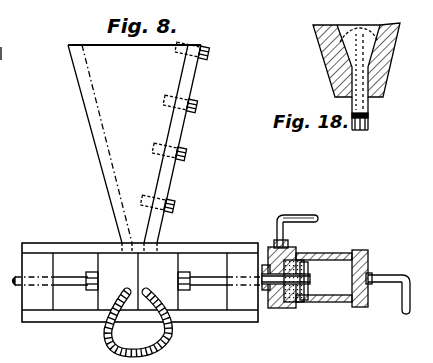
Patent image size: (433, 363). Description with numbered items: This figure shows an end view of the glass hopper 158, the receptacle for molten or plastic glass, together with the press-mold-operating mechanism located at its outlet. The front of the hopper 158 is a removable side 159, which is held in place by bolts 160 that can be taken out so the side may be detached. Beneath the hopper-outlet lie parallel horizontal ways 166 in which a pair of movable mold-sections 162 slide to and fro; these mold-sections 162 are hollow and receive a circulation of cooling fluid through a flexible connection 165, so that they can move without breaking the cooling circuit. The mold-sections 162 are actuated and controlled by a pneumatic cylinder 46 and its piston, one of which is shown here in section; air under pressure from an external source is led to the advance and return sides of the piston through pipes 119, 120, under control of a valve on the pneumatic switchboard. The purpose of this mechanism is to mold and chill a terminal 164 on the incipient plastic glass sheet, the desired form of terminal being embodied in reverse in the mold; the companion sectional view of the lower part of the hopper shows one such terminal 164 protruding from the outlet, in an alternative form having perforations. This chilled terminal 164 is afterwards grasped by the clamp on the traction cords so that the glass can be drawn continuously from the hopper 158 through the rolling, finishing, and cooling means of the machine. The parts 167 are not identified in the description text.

In FIG. 8, the pneumatic cylinder 46 is at (315, 277).
In FIG. 8, the air-supply pipe 119 is at (388, 293).
In FIG. 8, the air-return pipe 120 is at (310, 231).
In FIG. 8, the hopper 158 is at (134, 149).
In FIG. 18, the hopper 158 is at (397, 46).
In FIG. 8, the removable side 159 is at (188, 88).
In FIG. 8, the bolts 160 is at (209, 55).
In FIG. 8, the mold-sections 162 is at (138, 281).
In FIG. 18, the chilled terminal 164 is at (376, 117).
In FIG. 8, the flexible connection 165 is at (138, 322).
In FIG. 8, the ways 166 is at (193, 247).
In FIG. 8, the shaft bearings 167 is at (68, 274).